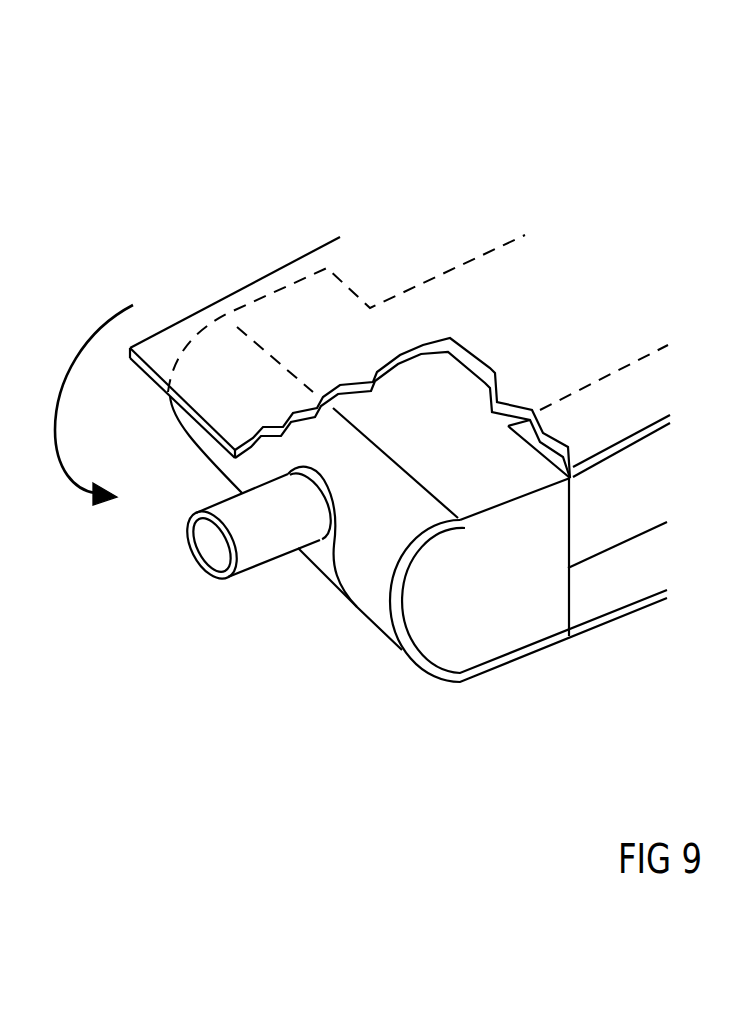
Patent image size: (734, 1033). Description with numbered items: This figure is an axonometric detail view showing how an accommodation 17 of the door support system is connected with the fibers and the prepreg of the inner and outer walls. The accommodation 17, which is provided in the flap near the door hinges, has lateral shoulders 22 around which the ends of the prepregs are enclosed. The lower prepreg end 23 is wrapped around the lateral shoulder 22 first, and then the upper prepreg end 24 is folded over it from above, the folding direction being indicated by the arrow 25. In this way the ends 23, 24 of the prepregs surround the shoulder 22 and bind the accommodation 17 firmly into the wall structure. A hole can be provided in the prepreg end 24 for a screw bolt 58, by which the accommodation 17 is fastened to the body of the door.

The accommodation 17 is at (449, 393).
The lateral shoulder 22 is at (508, 613).
The lower prepreg end 23 is at (373, 575).
The upper prepreg end 24 is at (214, 408).
The arrow 25 is at (140, 298).
The screw bolt 58 is at (258, 537).